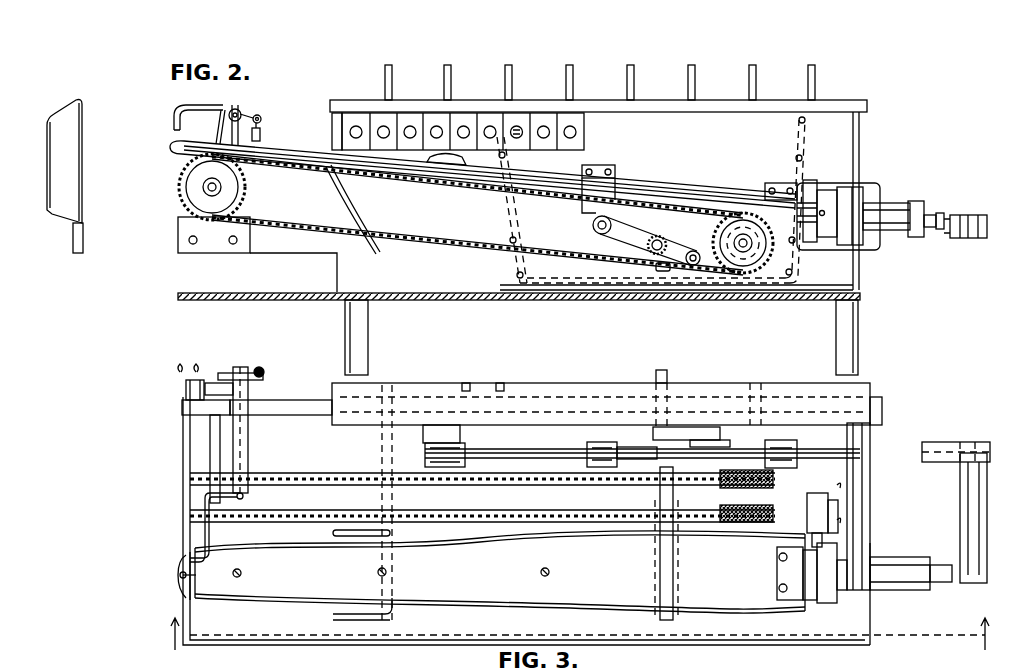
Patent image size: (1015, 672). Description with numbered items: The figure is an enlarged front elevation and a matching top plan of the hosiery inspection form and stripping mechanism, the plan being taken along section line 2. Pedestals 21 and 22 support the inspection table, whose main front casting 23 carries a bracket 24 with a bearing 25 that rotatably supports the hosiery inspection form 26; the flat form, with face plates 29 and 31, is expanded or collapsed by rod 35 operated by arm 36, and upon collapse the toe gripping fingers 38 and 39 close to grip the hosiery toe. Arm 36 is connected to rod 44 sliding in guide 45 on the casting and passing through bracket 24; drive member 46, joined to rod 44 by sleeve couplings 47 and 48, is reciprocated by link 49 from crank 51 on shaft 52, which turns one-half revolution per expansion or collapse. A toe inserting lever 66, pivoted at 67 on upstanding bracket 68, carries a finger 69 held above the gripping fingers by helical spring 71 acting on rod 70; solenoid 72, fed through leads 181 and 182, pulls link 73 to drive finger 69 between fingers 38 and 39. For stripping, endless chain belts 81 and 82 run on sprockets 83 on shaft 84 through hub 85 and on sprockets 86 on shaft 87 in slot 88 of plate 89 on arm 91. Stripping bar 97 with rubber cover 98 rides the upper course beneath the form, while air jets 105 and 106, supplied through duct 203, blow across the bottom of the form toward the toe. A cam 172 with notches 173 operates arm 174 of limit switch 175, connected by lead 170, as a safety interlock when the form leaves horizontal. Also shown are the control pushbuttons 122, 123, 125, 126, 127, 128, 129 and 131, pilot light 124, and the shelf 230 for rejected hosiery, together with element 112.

In FIG. 3, the section line 2 is at (579, 642).
In FIG. 2, the pedestal 21 is at (368, 352).
In FIG. 2, the pedestal 22 is at (836, 345).
In FIG. 2, the main front casting 23 is at (859, 130).
In FIG. 2, the bracket 24 is at (864, 186).
In FIG. 3, the bracket 24 is at (870, 475).
In FIG. 3, the bearing 25 is at (895, 590).
In FIG. 3, the hosiery inspection form 26 is at (466, 573).
In FIG. 2, the face plate 29 is at (552, 178).
In FIG. 3, the face plate 29 is at (497, 607).
In FIG. 2, the face plate 31 is at (556, 190).
In FIG. 2, the rod 35 is at (925, 237).
In FIG. 3, the rod 35 is at (945, 582).
In FIG. 2, the arm 36 is at (970, 215).
In FIG. 3, the arm 36 is at (960, 525).
In FIG. 3, the toe gripping finger 38 is at (186, 560).
In FIG. 2, the toe gripping finger 39 is at (170, 150).
In FIG. 3, the toe gripping finger 39 is at (190, 598).
In FIG. 2, the rod 44 is at (930, 215).
In FIG. 3, the rod 44 is at (520, 449).
In FIG. 2, the guide 45 is at (478, 155).
In FIG. 3, the guide 45 is at (478, 440).
In FIG. 2, the drive member 46 is at (668, 225).
In FIG. 2, the sleeve coupling 47 is at (615, 172).
In FIG. 3, the sleeve coupling 47 is at (625, 460).
In FIG. 2, the sleeve coupling 48 is at (765, 187).
In FIG. 3, the sleeve coupling 48 is at (780, 440).
In FIG. 2, the link 49 is at (593, 230).
In FIG. 3, the link 49 is at (595, 442).
In FIG. 2, the crank 51 is at (662, 240).
In FIG. 3, the crank 51 is at (672, 427).
In FIG. 2, the shaft 52 is at (693, 265).
In FIG. 3, the shaft 52 is at (667, 373).
In FIG. 2, the toe inserting lever 66 is at (208, 105).
In FIG. 3, the toe inserting lever 66 is at (212, 530).
In FIG. 2, the pivot 67 is at (237, 110).
In FIG. 3, the pivot 67 is at (243, 496).
In FIG. 2, the bracket 68 is at (260, 116).
In FIG. 3, the bracket 68 is at (248, 392).
In FIG. 2, the finger 69 is at (174, 124).
In FIG. 3, the finger 69 is at (180, 572).
In FIG. 2, the rod 70 is at (260, 122).
In FIG. 3, the rod 70 is at (264, 372).
In FIG. 2, the helical spring 71 is at (260, 135).
In FIG. 3, the solenoid 72 is at (186, 390).
In FIG. 2, the link 73 is at (217, 130).
In FIG. 3, the endless chain belt 81 is at (540, 485).
In FIG. 2, the endless chain belt 82 is at (447, 242).
In FIG. 3, the endless chain belt 82 is at (578, 508).
In FIG. 2, the sprocket 83 is at (740, 270).
In FIG. 3, the sprocket 83 is at (766, 492).
In FIG. 2, the shaft 84 is at (770, 262).
In FIG. 3, the shaft 84 is at (758, 390).
In FIG. 3, the hub 85 is at (708, 433).
In FIG. 2, the sprocket 86 is at (236, 205).
In FIG. 3, the sprocket 86 is at (184, 470).
In FIG. 2, the shaft 87 is at (222, 187).
In FIG. 3, the shaft 87 is at (210, 447).
In FIG. 2, the slot 88 is at (205, 187).
In FIG. 2, the plate 89 is at (178, 222).
In FIG. 3, the plate 89 is at (182, 410).
In FIG. 2, the arm 91 is at (290, 253).
In FIG. 3, the arm 91 is at (300, 405).
In FIG. 2, the stripping bar 97 is at (663, 271).
In FIG. 3, the stripping bar 97 is at (673, 500).
In FIG. 2, the rubber cover 98 is at (656, 267).
In FIG. 3, the rubber cover 98 is at (673, 620).
In FIG. 2, the air jet 105 is at (350, 195).
In FIG. 3, the air jet 105 is at (370, 620).
In FIG. 3, the air jet 106 is at (390, 533).
In FIG. 2, the door panel 112 is at (82, 122).
In FIG. 2, the pushbutton 122 is at (545, 112).
In FIG. 2, the pushbutton 123 is at (576, 132).
In FIG. 2, the pilot light 124 is at (518, 112).
In FIG. 2, the pushbutton 125 is at (490, 112).
In FIG. 2, the pushbutton 126 is at (484, 183).
In FIG. 2, the pushbutton 127 is at (340, 128).
In FIG. 2, the pushbutton 128 is at (376, 115).
In FIG. 2, the pushbutton 129 is at (430, 112).
In FIG. 2, the pushbutton 131 is at (403, 112).
In FIG. 3, the lead 170 is at (838, 487).
In FIG. 2, the cam 172 is at (810, 180).
In FIG. 3, the cam 172 is at (790, 600).
In FIG. 2, the notch 173 is at (845, 245).
In FIG. 3, the notch 173 is at (827, 603).
In FIG. 3, the arm 174 is at (812, 540).
In FIG. 3, the limit switch 175 is at (815, 493).
In FIG. 3, the lead 181 is at (180, 364).
In FIG. 3, the lead 182 is at (196, 364).
In FIG. 2, the duct 203 is at (83, 243).
In FIG. 2, the shelf 230 is at (662, 100).